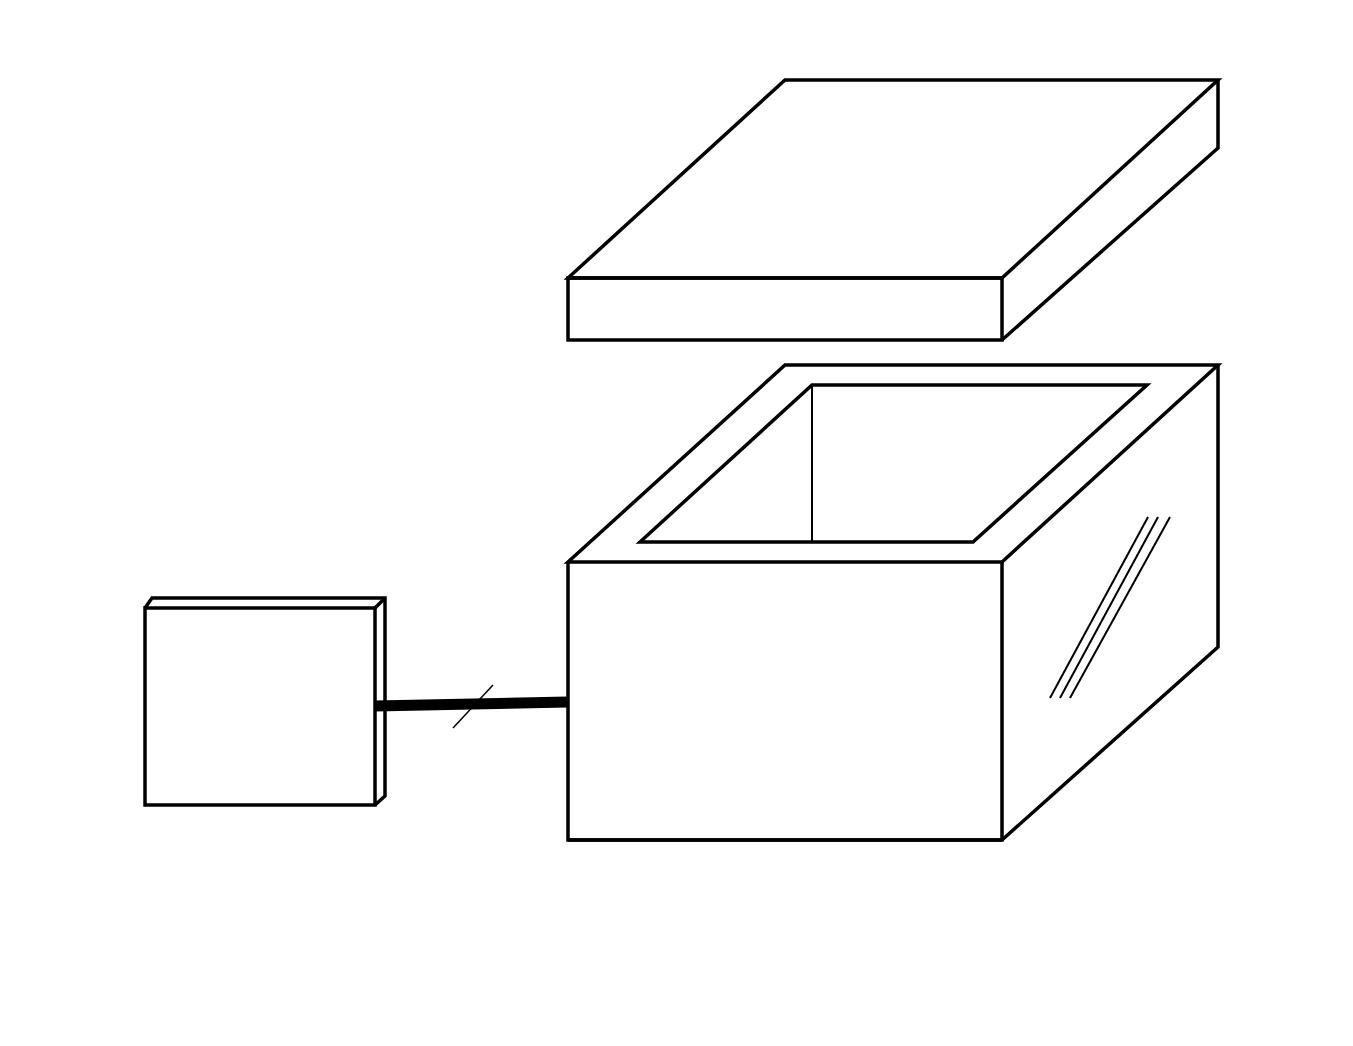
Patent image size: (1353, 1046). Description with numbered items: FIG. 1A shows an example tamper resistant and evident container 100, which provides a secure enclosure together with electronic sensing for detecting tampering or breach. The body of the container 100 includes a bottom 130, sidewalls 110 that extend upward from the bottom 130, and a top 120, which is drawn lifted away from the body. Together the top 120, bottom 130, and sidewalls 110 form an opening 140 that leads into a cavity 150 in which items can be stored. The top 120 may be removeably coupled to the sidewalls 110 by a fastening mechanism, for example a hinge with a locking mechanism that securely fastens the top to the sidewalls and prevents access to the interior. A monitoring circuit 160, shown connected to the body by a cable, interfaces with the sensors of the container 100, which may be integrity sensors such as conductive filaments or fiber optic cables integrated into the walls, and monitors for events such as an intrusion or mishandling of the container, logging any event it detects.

The tamper resistant and evident container 100 is at (356, 184).
The sidewalls 110 is at (1205, 478).
The top 120 is at (1200, 125).
The bottom 130 is at (952, 845).
The opening 140 is at (1133, 328).
The cavity 150 is at (750, 479).
The monitoring circuit 160 is at (262, 607).